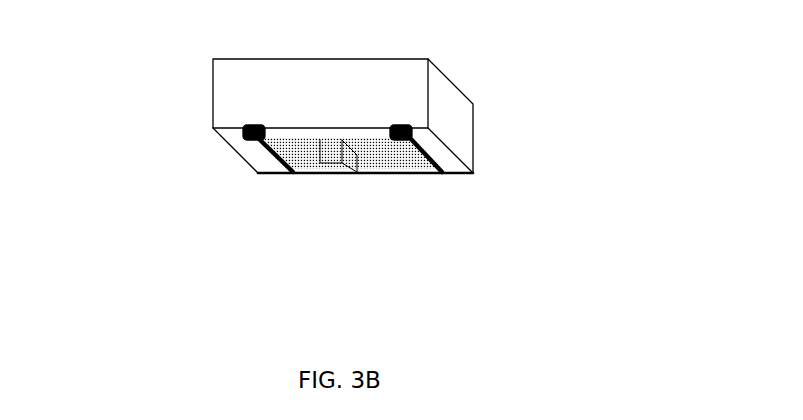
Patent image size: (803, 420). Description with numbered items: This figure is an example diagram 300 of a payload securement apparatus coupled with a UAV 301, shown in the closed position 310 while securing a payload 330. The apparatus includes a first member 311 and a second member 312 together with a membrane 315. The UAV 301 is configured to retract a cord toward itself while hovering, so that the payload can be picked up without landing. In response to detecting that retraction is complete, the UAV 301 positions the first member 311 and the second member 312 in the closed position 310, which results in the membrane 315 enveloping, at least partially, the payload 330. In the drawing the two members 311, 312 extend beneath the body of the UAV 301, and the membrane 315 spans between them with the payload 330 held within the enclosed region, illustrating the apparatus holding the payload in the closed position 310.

The example diagram 300 is at (335, 145).
The UAV 301 is at (475, 107).
The closed position 310 is at (252, 155).
The first member 311 is at (276, 157).
The second member 312 is at (427, 153).
The membrane 315 is at (375, 153).
The payload 330 is at (337, 172).